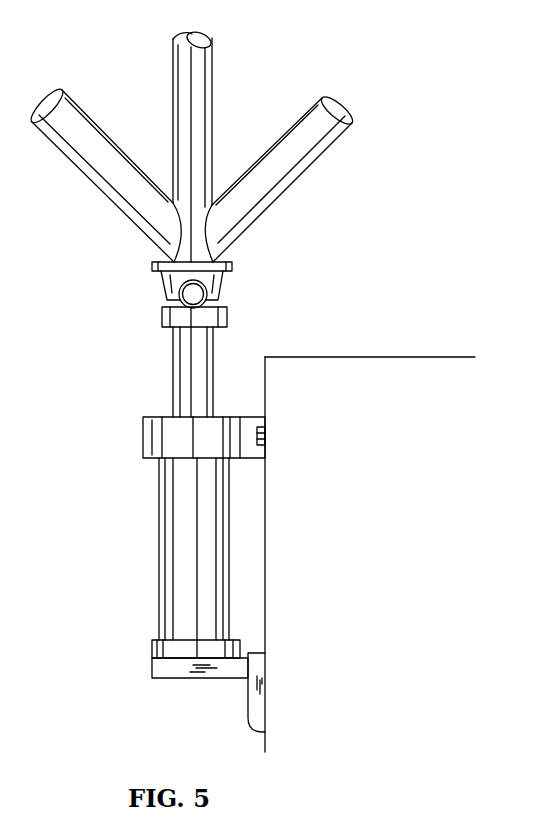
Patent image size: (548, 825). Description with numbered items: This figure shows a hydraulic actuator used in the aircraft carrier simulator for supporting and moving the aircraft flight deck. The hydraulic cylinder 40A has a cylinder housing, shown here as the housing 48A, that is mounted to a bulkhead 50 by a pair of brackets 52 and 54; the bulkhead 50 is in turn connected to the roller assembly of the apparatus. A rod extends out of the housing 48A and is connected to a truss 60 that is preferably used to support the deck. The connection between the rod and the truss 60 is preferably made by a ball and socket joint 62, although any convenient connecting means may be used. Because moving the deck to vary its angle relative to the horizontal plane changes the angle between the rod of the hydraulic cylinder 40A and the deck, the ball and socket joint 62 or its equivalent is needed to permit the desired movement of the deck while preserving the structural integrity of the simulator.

The truss 60 is at (121, 253).
The ball and socket joint 62 is at (122, 310).
The bulkhead 50 is at (265, 393).
The bracket 52 is at (109, 461).
The hydraulic cylinder 40A is at (159, 485).
The cylinder sleeve 48A is at (159, 583).
The bracket 54 is at (212, 695).